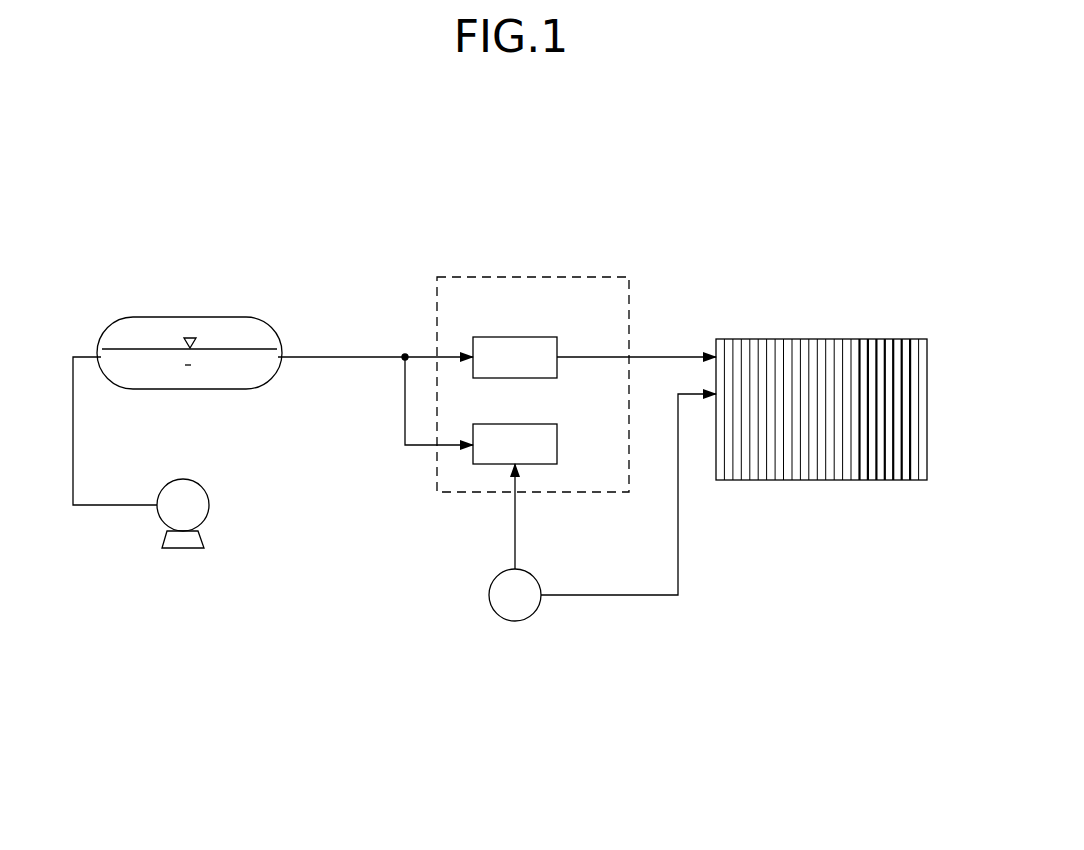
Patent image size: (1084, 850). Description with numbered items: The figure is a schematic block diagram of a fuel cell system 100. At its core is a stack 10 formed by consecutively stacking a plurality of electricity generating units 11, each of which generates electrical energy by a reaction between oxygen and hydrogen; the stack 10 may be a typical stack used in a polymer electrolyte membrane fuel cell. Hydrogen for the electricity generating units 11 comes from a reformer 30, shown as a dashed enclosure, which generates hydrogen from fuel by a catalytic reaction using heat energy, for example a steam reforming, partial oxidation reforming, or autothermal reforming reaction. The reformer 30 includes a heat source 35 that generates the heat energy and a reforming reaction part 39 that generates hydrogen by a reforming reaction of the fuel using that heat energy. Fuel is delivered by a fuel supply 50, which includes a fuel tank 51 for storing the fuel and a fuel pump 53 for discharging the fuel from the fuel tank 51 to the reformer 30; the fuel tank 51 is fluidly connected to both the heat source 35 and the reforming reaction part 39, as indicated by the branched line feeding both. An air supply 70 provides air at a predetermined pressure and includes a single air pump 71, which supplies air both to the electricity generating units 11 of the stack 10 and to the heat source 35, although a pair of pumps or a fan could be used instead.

The fuel cell system 100 is at (477, 174).
The stack 10 is at (821, 395).
The electricity generating unit 11 is at (762, 472).
The reformer 30 is at (533, 358).
The heat source 35 is at (557, 443).
The reforming reaction part 39 is at (534, 337).
The fuel supply 50 is at (177, 427).
The fuel tank 51 is at (212, 317).
The fuel pump 53 is at (198, 482).
The air supply 70 is at (589, 550).
The air pump 71 is at (502, 569).